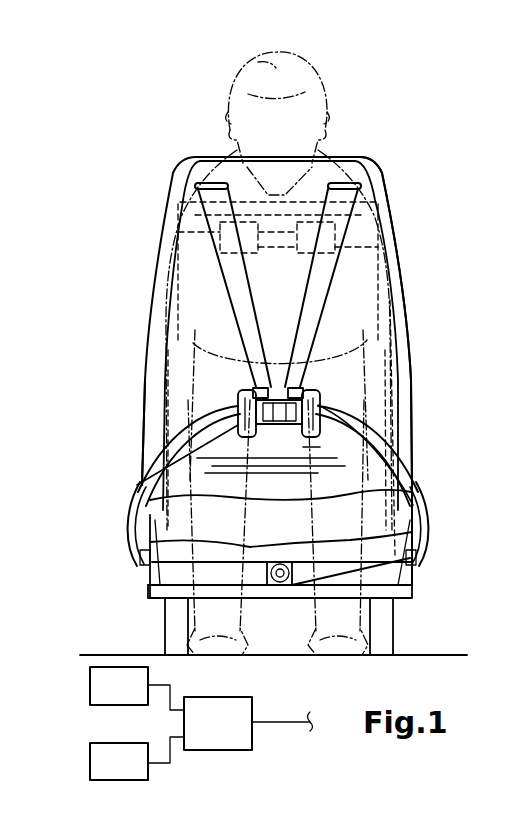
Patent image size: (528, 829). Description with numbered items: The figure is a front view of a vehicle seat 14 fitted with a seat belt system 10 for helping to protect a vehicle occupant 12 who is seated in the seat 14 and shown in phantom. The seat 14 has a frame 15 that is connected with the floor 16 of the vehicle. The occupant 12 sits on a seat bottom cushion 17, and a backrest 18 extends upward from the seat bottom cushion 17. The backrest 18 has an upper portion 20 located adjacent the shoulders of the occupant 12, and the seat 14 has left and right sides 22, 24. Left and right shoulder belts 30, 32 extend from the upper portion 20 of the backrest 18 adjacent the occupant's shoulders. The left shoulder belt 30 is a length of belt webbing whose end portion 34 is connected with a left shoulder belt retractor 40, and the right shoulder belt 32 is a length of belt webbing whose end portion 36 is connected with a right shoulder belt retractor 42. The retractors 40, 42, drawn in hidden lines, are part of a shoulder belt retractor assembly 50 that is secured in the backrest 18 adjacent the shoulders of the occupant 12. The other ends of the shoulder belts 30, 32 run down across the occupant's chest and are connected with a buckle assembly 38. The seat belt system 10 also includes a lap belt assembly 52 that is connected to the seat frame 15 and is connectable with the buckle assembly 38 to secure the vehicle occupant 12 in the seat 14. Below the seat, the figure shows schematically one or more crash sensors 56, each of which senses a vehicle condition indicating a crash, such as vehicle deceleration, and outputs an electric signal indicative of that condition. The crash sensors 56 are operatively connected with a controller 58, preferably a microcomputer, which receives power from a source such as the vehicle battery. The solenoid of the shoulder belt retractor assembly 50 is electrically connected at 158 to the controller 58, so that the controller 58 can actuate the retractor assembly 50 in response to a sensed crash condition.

The seat belt system 10 is at (394, 106).
The vehicle occupant 12 is at (275, 70).
The vehicle seat 14 is at (162, 164).
The frame 15 is at (390, 310).
The floor 16 is at (84, 654).
The seat bottom cushion 17 is at (232, 507).
The backrest 18 is at (173, 205).
The upper portion 20 is at (375, 178).
The left side 22 is at (412, 365).
The right side 24 is at (145, 375).
The left shoulder belt 30 is at (323, 277).
The right shoulder belt 32 is at (243, 273).
The end portion 34 is at (310, 222).
The end portion 36 is at (240, 222).
The buckle assembly 38 is at (334, 388).
The left shoulder belt retractor 40 is at (378, 215).
The right shoulder belt retractor 42 is at (220, 232).
The shoulder belt retractor assembly 50 is at (276, 256).
The lap belt assembly 52 is at (384, 431).
The crash sensors 56 is at (90, 690).
The controller 58 is at (212, 750).
The electrical connection 158 is at (277, 722).